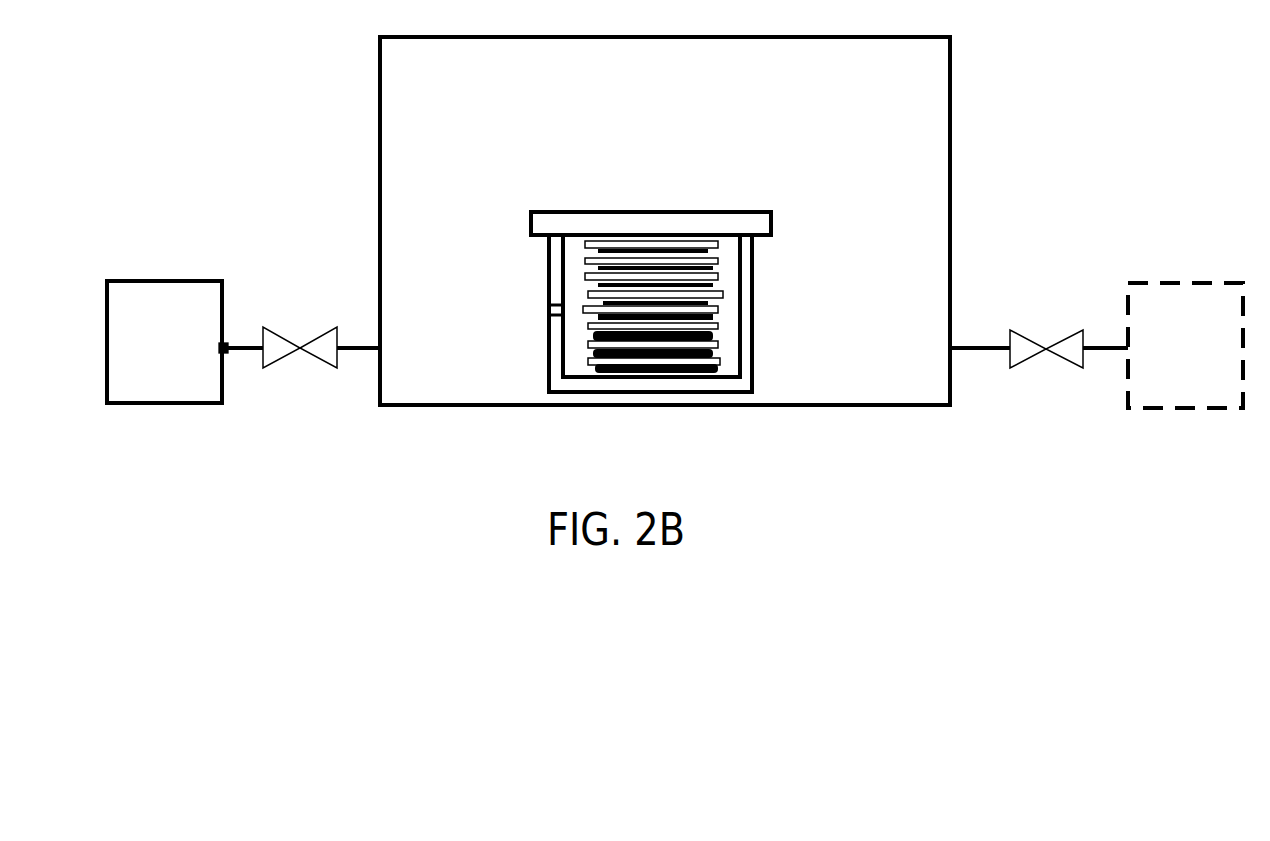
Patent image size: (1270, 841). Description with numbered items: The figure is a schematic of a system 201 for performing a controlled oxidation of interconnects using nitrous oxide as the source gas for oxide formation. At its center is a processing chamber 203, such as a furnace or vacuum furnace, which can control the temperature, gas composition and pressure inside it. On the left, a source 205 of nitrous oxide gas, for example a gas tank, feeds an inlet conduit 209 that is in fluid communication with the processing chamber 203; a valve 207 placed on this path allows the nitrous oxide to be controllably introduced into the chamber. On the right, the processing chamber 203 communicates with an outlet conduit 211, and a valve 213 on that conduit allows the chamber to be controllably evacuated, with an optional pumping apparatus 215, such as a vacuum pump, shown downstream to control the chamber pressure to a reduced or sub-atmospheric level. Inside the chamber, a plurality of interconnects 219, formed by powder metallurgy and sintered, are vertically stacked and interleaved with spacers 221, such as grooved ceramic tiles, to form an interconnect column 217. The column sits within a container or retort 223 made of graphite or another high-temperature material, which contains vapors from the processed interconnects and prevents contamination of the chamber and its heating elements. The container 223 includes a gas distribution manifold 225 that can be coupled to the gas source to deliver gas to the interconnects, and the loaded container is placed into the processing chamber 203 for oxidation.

The system 201 is at (258, 100).
The processing chamber 203 is at (475, 107).
The source 205 is at (164, 345).
The valve 207 is at (303, 322).
The inlet conduit 209 is at (352, 336).
The outlet conduit 211 is at (977, 338).
The valve 213 is at (1058, 322).
The pumping apparatus 215 is at (1185, 347).
The interconnect column 217 is at (714, 198).
The interconnects 219 is at (724, 270).
The spacers 221 is at (728, 249).
The container 223 is at (541, 274).
The gas distribution manifold 225 is at (541, 318).